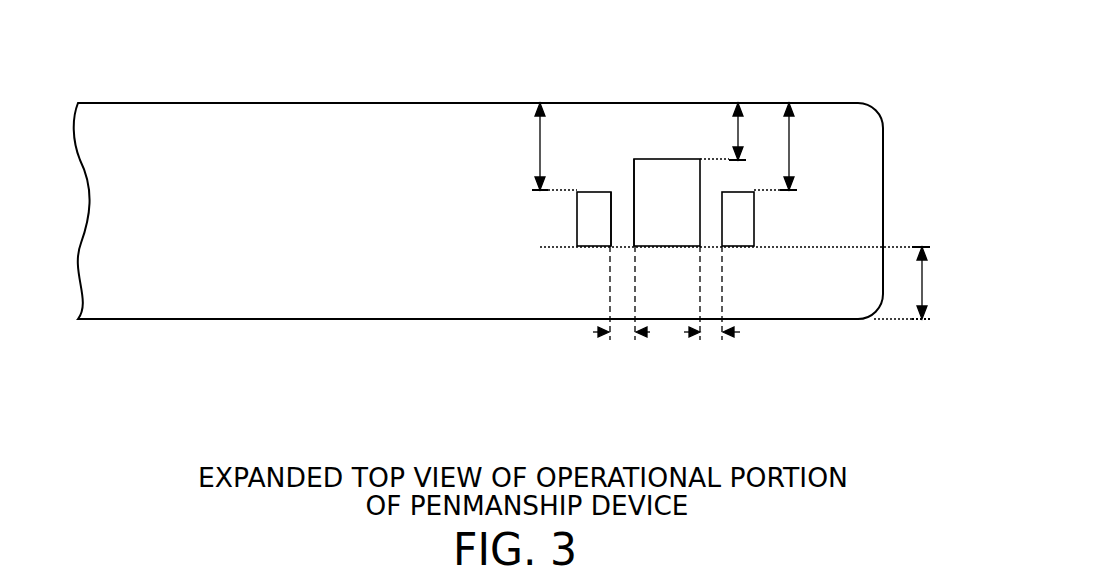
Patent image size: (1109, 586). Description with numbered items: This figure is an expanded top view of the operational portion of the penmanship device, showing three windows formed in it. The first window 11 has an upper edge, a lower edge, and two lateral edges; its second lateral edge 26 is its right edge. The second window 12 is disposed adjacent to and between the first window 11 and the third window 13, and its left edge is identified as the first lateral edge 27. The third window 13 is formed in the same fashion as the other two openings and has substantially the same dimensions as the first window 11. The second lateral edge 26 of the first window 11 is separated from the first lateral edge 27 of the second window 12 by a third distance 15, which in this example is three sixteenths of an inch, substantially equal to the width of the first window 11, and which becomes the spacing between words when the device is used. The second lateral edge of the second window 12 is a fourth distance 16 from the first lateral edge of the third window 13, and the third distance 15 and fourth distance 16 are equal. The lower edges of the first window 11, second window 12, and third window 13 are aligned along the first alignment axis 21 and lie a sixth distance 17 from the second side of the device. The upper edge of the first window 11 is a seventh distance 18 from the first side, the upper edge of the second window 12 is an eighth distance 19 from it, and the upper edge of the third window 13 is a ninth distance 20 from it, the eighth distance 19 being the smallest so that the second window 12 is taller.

The first window 11 is at (594, 219).
The second window 12 is at (667, 202).
The third window 13 is at (738, 219).
The third distance 15 is at (621, 340).
The fourth distance 16 is at (712, 340).
The sixth distance 17 is at (922, 278).
The seventh distance 18 is at (540, 150).
The eighth distance 19 is at (738, 130).
The ninth distance 20 is at (789, 149).
The first alignment axis 21 is at (543, 250).
The second lateral edge 26 is at (611, 198).
The first lateral edge 27 is at (634, 183).